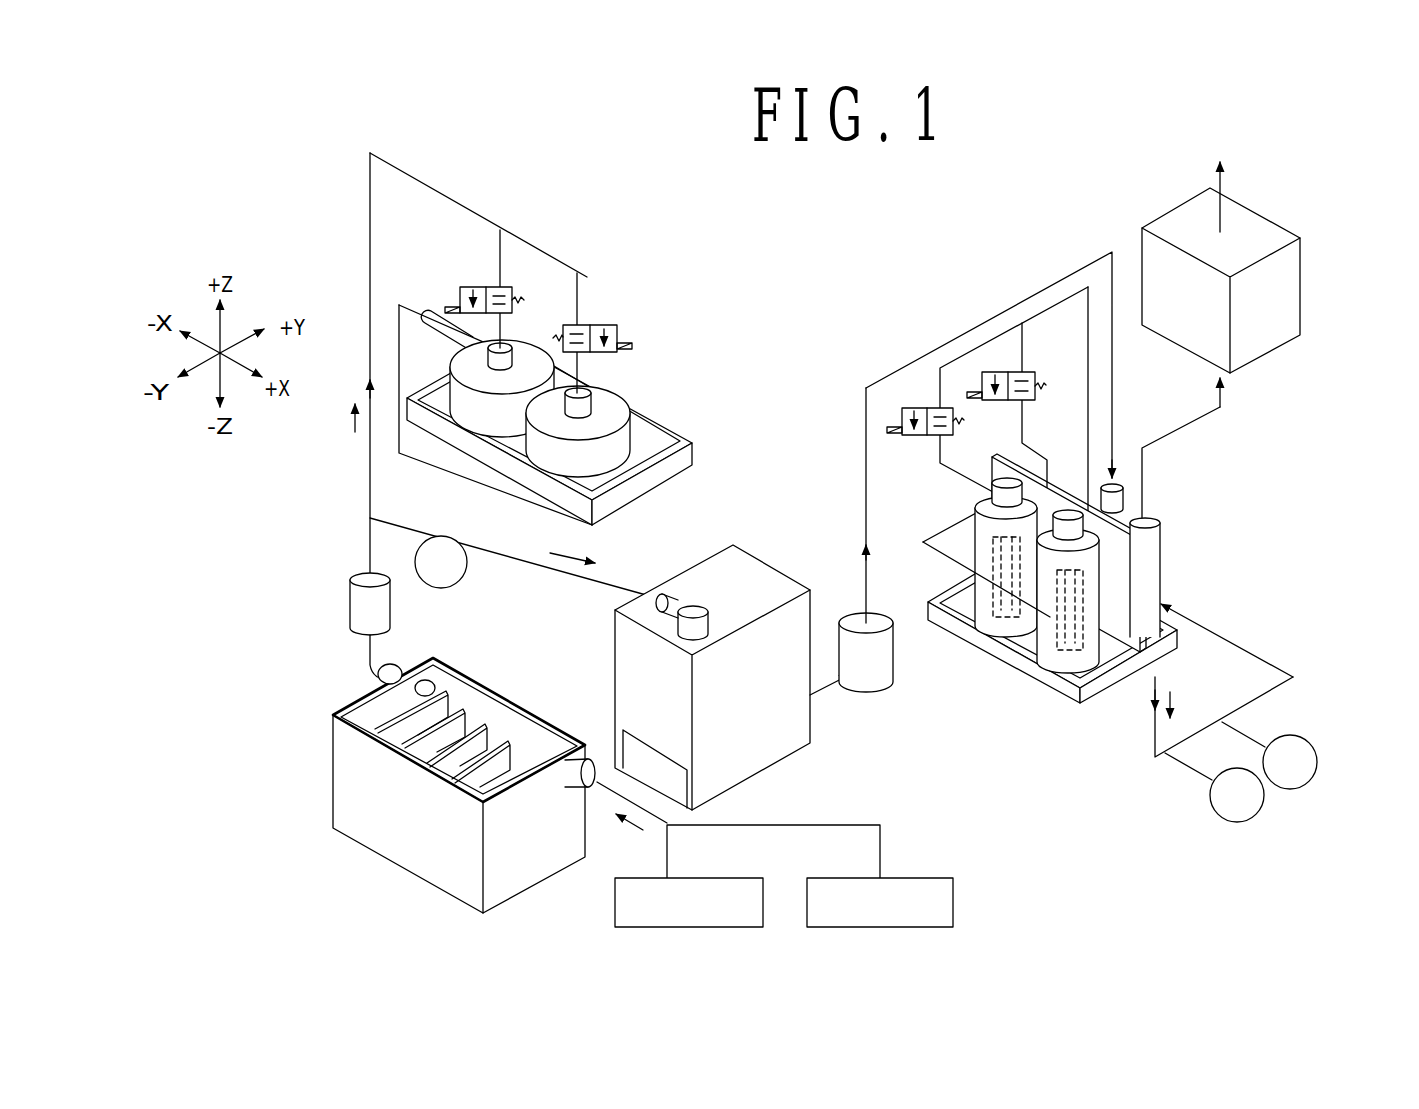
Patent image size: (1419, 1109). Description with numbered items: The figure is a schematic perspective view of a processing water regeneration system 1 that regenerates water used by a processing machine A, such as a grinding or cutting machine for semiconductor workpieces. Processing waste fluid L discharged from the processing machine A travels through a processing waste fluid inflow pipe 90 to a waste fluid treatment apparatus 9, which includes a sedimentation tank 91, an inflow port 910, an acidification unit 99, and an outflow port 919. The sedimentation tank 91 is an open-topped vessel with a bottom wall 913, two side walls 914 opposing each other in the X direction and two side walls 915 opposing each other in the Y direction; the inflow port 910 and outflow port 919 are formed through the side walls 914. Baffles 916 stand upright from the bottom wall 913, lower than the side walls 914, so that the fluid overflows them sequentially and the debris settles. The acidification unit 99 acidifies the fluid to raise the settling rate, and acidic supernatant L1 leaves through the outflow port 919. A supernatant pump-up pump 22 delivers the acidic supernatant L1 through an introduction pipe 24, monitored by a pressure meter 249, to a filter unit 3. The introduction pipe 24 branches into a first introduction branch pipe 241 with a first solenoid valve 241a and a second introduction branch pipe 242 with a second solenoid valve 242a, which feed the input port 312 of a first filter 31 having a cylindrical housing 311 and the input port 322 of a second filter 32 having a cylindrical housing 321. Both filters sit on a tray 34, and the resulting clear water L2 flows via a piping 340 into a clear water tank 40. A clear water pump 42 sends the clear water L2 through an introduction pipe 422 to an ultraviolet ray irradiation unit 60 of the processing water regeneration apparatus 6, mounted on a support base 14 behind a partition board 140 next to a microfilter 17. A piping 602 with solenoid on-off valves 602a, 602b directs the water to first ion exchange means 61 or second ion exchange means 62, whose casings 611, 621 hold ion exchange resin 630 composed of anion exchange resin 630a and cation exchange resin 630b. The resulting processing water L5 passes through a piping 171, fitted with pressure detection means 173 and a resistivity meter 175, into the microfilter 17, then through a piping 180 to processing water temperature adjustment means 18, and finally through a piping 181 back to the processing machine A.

The processing water regeneration system 1 is at (301, 186).
The filter unit 3 is at (710, 332).
The processing water regeneration apparatus 6 is at (927, 569).
The waste fluid treatment apparatus 9 is at (390, 783).
The support base 14 is at (1078, 746).
The microfilter 17 is at (1160, 536).
The processing water temperature adjustment means 18 is at (1258, 336).
The supernatant pump-up pump 22 is at (355, 607).
The introduction pipe 24 is at (368, 543).
The first filter 31 is at (466, 428).
The second filter 32 is at (538, 470).
The tray 34 is at (660, 476).
The clear water tank 40 is at (753, 752).
The clear water pump 42 is at (865, 677).
The ultraviolet ray irradiation unit 60 is at (1113, 453).
The first ion exchange means 61 is at (973, 644).
The second ion exchange means 62 is at (1047, 648).
The processing waste fluid inflow pipe 90 is at (818, 823).
The sedimentation tank 91 is at (344, 851).
The acidification unit 99 is at (715, 877).
The partition board 140 is at (1150, 583).
The piping 171 is at (1195, 730).
The pressure detection means 173 is at (1250, 798).
The resistivity meter 175 is at (1302, 750).
The piping 180 is at (1213, 418).
The piping 181 is at (1222, 183).
The first introduction branch pipe 241 is at (497, 245).
The first solenoid valve 241a is at (460, 291).
The second introduction branch pipe 242 is at (577, 280).
The second solenoid valve 242a is at (597, 324).
The pressure meter 249 is at (458, 565).
The cylindrical housing 311 is at (527, 346).
The input port 312 is at (507, 340).
The cylindrical housing 321 is at (627, 410).
The input port 322 is at (610, 383).
The piping 340 is at (425, 473).
The introduction pipe 422 is at (901, 370).
The piping 602 is at (1046, 310).
The solenoid on-off valve 602a is at (902, 412).
The solenoid on-off valve 602b is at (1003, 372).
The casing 611 is at (1003, 502).
The casing 621 is at (1049, 482).
The ion exchange resin 630 is at (984, 557).
The anion exchange resin 630a is at (975, 596).
The cation exchange resin 630b is at (1012, 640).
The inflow port 910 is at (588, 758).
The bottom wall 913 is at (425, 880).
The side wall 914 is at (525, 848).
The side wall 915 is at (513, 702).
The baffle 916 is at (380, 742).
The outflow port 919 is at (398, 668).
The processing machine A is at (953, 893).
The processing waste fluid L is at (637, 833).
The acidic supernatant L1 is at (350, 420).
The clear water L2 is at (567, 566).
The processing water L5 is at (1173, 700).